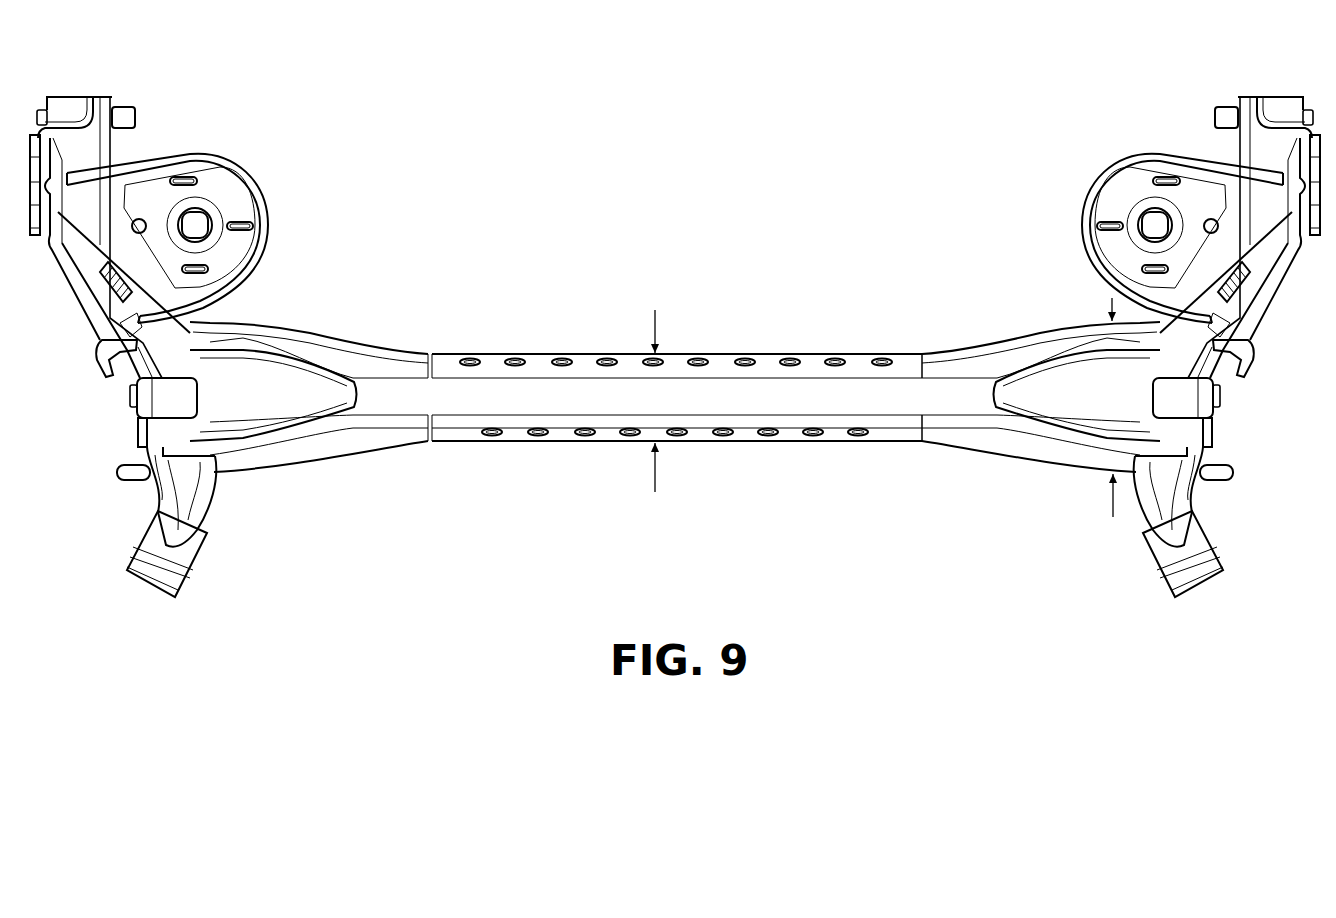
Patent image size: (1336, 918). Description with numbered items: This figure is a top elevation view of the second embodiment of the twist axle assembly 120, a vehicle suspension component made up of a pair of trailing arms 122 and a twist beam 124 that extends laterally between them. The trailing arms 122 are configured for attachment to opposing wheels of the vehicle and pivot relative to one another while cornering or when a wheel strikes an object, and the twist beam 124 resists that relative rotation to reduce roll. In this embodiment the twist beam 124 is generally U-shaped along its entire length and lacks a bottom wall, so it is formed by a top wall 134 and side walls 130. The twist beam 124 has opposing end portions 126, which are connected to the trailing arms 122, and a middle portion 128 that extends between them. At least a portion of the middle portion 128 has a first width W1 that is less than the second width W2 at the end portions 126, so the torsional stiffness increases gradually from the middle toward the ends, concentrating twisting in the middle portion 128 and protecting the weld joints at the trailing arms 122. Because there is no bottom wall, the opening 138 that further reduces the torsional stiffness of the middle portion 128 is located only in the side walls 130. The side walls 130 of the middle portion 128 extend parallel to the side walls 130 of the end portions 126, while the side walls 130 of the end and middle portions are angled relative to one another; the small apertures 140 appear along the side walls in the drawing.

The twist axle assembly 120 is at (660, 283).
The trailing arms 122 is at (1263, 153).
The twist beam 124 is at (723, 317).
The end portions 126 is at (1004, 338).
The middle portion 128 is at (591, 354).
The side walls 130 is at (540, 357).
The top wall 134 is at (927, 397).
The opening 138 is at (523, 400).
The lower apertures 140 is at (628, 436).
The first width W1 is at (660, 415).
The second width W2 is at (1118, 424).